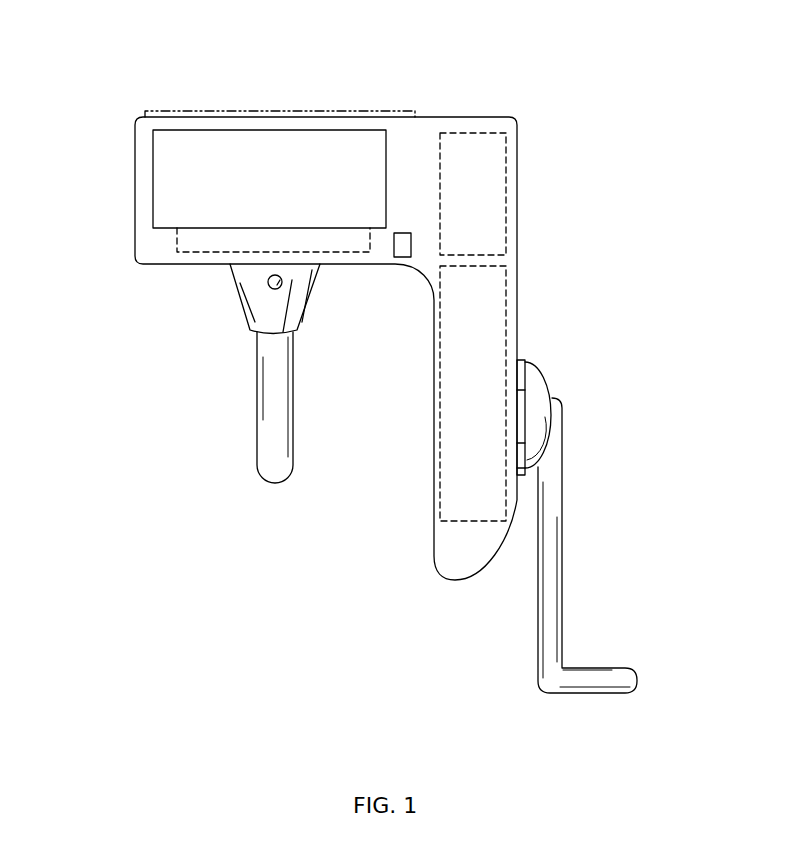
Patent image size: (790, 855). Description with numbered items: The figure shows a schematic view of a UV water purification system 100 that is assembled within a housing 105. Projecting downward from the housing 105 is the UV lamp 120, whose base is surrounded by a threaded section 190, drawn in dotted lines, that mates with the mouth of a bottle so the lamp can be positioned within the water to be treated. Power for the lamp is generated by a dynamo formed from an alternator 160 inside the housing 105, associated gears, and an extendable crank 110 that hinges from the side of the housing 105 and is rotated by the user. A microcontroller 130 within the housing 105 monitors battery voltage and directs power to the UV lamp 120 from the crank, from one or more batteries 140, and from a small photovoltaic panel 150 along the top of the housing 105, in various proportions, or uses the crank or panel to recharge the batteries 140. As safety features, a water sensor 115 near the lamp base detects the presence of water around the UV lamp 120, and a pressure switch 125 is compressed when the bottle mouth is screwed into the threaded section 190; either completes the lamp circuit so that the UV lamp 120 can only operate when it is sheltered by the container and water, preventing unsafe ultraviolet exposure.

The UV water purification system 100 is at (546, 35).
The housing 105 is at (135, 158).
The extendable crank 110 is at (560, 625).
The water sensor 115 is at (268, 284).
The UV lamp 120 is at (257, 445).
The pressure switch 125 is at (401, 250).
The microcontroller 130 is at (343, 142).
The batteries 140 is at (490, 197).
The photovoltaic panel 150 is at (232, 108).
The alternator 160 is at (500, 322).
The threaded section 190 is at (177, 250).